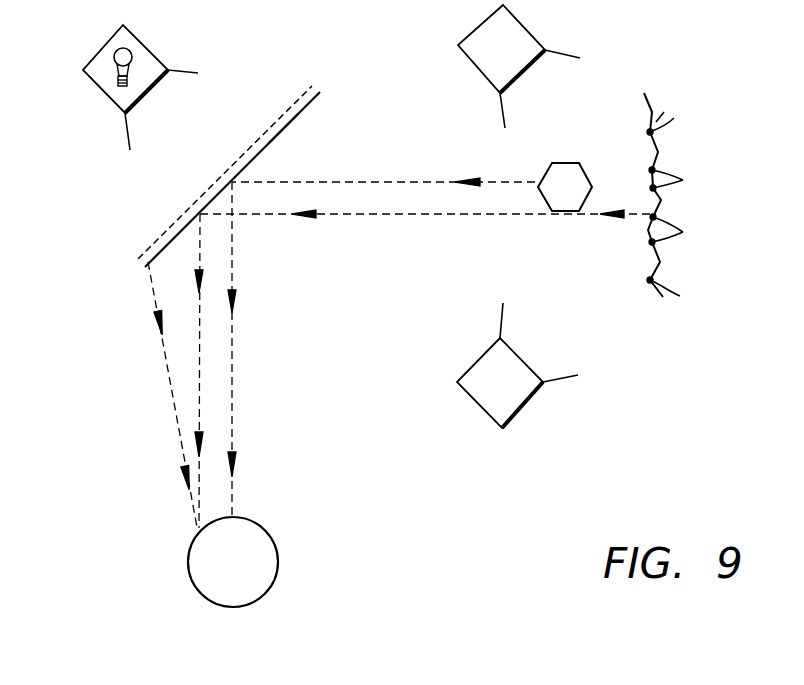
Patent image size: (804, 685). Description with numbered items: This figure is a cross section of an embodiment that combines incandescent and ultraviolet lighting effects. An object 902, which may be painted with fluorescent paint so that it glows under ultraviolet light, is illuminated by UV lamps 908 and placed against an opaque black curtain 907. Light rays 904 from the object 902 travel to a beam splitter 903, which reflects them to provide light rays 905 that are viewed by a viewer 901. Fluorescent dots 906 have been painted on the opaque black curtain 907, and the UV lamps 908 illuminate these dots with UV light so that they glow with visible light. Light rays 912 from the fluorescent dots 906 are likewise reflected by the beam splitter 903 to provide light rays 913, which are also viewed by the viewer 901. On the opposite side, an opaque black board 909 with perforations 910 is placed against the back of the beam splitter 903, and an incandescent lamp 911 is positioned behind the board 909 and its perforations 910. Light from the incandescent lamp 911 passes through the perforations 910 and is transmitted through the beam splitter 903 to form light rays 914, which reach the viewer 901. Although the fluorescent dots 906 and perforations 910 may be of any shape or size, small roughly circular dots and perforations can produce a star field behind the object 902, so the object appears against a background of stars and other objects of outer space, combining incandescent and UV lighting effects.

The viewer 901 is at (187, 555).
The object 902 is at (565, 162).
The beam splitter 903 is at (300, 117).
The light rays 904 is at (410, 181).
The light rays 905 is at (232, 338).
The fluorescent dots 906 is at (674, 118).
The opaque black curtain 907 is at (644, 183).
The UV lamps 908 is at (476, 67).
The opaque black board 909 is at (305, 90).
The perforations 910 is at (283, 110).
The incandescent lamp 911 is at (95, 82).
The light rays 912 is at (490, 215).
The light rays 913 is at (200, 387).
The light rays 914 is at (170, 377).